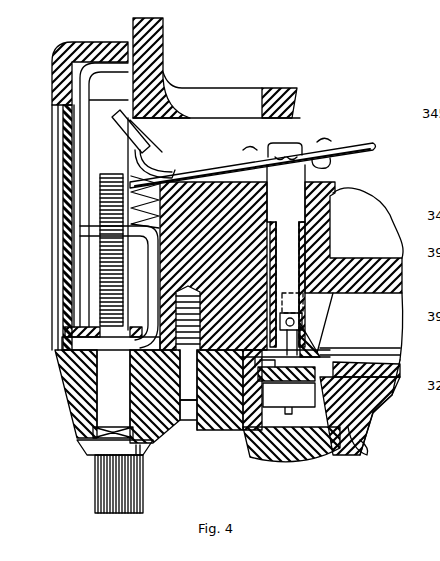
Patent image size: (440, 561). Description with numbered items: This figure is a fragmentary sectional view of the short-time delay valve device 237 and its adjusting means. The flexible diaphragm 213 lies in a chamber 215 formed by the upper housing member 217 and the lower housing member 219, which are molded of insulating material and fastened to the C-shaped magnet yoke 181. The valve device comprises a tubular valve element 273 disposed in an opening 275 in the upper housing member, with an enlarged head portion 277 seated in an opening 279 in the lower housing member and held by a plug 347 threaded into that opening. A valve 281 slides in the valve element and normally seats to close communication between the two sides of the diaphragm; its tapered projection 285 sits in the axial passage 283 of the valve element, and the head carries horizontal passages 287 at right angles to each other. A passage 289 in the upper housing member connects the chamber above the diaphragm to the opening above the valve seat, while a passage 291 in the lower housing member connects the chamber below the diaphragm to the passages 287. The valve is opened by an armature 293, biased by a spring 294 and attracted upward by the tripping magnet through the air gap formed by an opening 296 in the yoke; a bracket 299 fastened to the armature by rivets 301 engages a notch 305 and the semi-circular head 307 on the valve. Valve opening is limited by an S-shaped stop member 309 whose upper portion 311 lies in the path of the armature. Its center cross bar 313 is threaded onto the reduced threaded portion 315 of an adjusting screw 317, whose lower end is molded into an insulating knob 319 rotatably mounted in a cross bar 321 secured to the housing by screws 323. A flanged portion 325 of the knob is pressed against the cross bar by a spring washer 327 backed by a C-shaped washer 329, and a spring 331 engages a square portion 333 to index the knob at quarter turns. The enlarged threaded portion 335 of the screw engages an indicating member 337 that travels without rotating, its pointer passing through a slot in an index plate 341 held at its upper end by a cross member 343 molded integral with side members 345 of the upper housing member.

The magnet yoke 181 is at (164, 46).
The flexible diaphragm 213 is at (376, 378).
The chamber 215 is at (393, 308).
The upper housing member 217 is at (334, 197).
The lower housing member 219 is at (371, 416).
The short-time delay valve device 237 is at (303, 492).
The tubular valve element 273 is at (308, 230).
The opening 275 is at (330, 222).
The enlarged head portion 277 is at (350, 432).
The opening 279 is at (250, 437).
The valve 281 is at (293, 243).
The axial passage 283 is at (320, 347).
The tapered projection 285 is at (307, 386).
The horizontal passages 287 is at (311, 397).
The passage 289 is at (327, 313).
The passage 291 is at (380, 367).
The armature 293 is at (367, 147).
The spring 294 is at (173, 175).
The opening 296 is at (222, 94).
The bracket 299 is at (318, 166).
The rivets 301 is at (250, 150).
The notch 305 is at (287, 146).
The semi-circular head 307 is at (278, 147).
The S-shaped stop member 309 is at (74, 151).
The upper portion 311 is at (107, 98).
The center cross bar 313 is at (170, 215).
The reduced threaded portion 315 is at (125, 177).
The adjusting screw 317 is at (84, 433).
The insulating knob 319 is at (100, 490).
The cross bar 321 is at (144, 440).
The screws 323 is at (241, 400).
The flanged portion 325 is at (97, 448).
The spring washer 327 is at (113, 413).
The C-shaped washer 329 is at (102, 360).
The spring 331 is at (139, 454).
The square portion 333 is at (138, 463).
The enlarged threaded portion 335 is at (160, 262).
The indicating member 337 is at (152, 323).
The index plate 341 is at (67, 127).
The cross member 343 is at (82, 40).
The side members 345 is at (125, 135).
The plug 347 is at (322, 462).